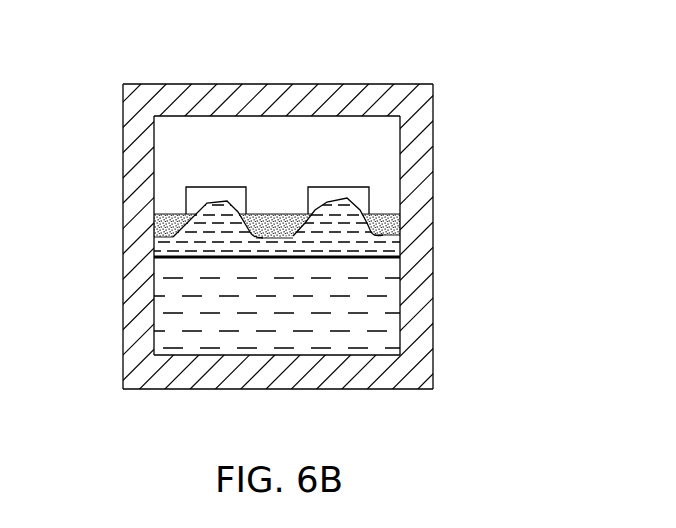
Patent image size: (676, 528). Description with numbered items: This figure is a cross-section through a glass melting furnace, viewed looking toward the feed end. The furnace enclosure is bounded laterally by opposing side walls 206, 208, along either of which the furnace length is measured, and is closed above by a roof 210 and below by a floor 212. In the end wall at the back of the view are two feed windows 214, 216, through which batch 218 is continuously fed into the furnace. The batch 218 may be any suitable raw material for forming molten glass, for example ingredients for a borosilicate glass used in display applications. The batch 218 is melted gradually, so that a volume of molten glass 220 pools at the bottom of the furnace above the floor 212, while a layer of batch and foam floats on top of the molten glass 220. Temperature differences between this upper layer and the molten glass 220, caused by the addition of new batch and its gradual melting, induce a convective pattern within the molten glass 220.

The side wall 206 is at (435, 155).
The side wall 208 is at (122, 193).
The roof 210 is at (257, 82).
The floor 212 is at (310, 375).
The feed window 214 is at (220, 187).
The feed window 216 is at (346, 187).
The batch 218 is at (395, 225).
The molten glass 220 is at (385, 300).